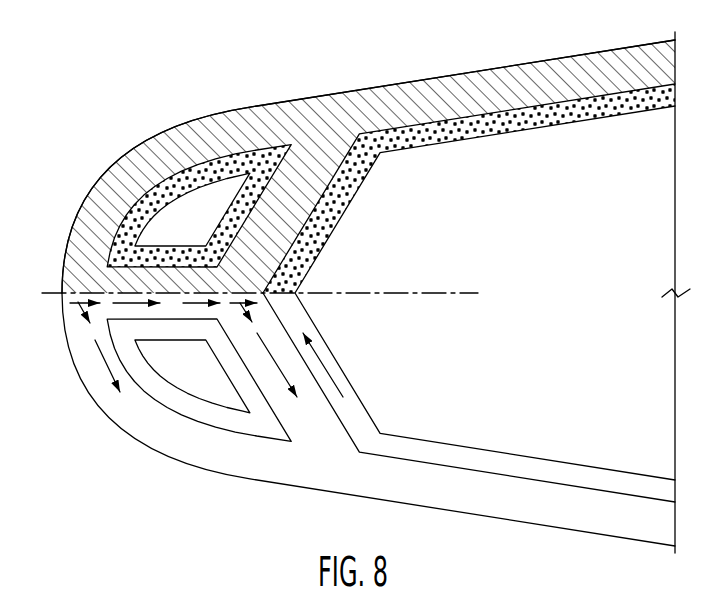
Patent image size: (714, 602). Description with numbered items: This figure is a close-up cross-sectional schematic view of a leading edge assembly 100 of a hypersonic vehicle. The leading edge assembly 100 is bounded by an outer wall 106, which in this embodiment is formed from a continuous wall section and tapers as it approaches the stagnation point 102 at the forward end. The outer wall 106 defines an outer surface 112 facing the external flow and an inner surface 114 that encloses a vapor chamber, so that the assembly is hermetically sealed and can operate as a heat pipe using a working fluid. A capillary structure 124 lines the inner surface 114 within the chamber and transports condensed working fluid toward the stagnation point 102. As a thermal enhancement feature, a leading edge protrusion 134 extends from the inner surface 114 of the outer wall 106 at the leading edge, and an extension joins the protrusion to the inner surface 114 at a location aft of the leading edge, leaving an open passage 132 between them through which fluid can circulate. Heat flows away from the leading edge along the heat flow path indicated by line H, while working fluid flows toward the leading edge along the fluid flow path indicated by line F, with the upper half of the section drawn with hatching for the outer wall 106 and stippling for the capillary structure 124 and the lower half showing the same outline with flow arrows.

The leading edge assembly 100 is at (86, 141).
The stagnation point 102 is at (64, 296).
The outer wall 106 is at (481, 90).
The outer surface 112 is at (162, 465).
The inner surface 114 is at (531, 134).
The capillary structure 124 is at (426, 138).
The vapor channel 132 is at (313, 430).
The leading edge protrusion 134 is at (190, 299).
The heat flow path H is at (193, 304).
The fluid flow path F is at (327, 368).